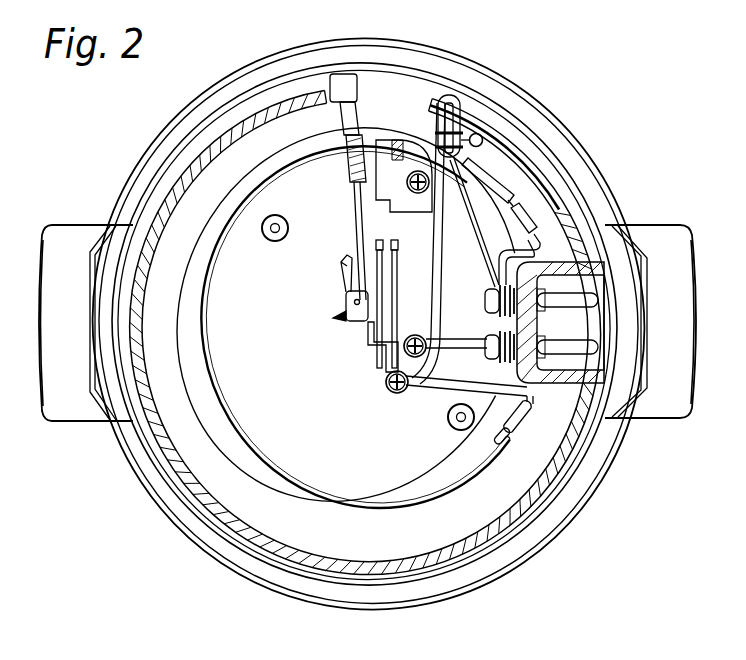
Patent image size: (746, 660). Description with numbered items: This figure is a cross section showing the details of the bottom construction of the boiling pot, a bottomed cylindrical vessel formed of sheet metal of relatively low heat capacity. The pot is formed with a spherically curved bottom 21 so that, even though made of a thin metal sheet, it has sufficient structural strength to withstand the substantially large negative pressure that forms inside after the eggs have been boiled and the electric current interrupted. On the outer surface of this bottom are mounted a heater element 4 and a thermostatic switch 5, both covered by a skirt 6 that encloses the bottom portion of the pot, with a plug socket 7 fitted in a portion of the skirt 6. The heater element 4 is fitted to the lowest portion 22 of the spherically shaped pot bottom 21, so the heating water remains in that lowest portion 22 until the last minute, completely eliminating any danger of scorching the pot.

The heater element 4 is at (480, 465).
The thermostatic switch 5 is at (365, 207).
The skirt 6 is at (200, 490).
The plug socket 7 is at (598, 355).
The spherically curved bottom 21 is at (303, 366).
The lowest portion 22 is at (243, 502).